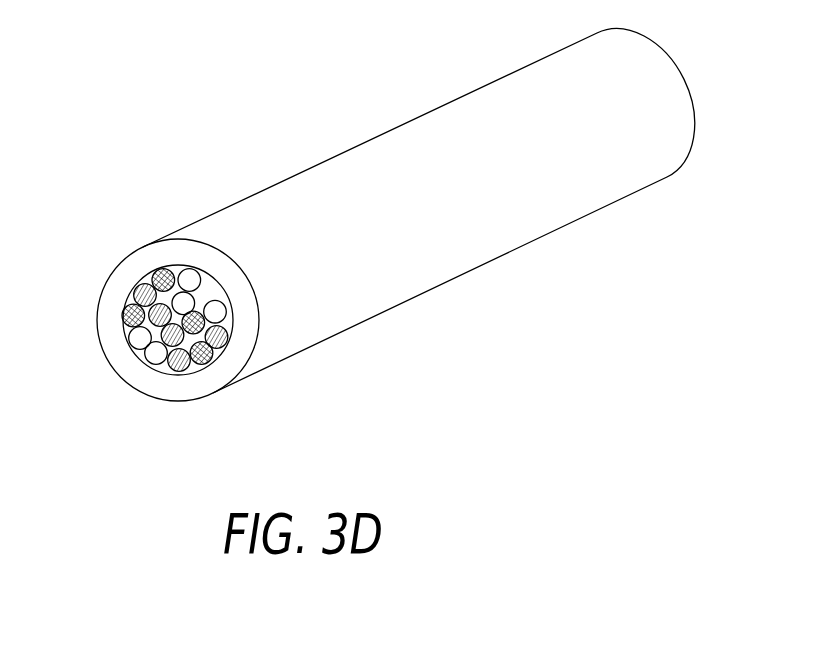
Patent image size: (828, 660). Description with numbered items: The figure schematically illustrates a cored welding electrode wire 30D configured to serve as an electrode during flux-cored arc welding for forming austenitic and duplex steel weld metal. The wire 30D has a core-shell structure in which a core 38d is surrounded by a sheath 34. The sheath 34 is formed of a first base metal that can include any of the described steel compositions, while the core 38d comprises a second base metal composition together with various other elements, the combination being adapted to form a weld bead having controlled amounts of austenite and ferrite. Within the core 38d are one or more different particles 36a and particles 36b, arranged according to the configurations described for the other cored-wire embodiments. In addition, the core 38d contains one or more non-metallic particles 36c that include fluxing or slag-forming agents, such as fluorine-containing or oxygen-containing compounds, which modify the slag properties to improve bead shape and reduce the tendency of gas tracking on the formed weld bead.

The welding electrode wire 30D is at (200, 209).
The sheath 34 is at (150, 258).
The core 38d is at (163, 376).
The particles 36a is at (140, 294).
The particles 36b is at (155, 269).
The non-metallic particles 36c is at (190, 374).